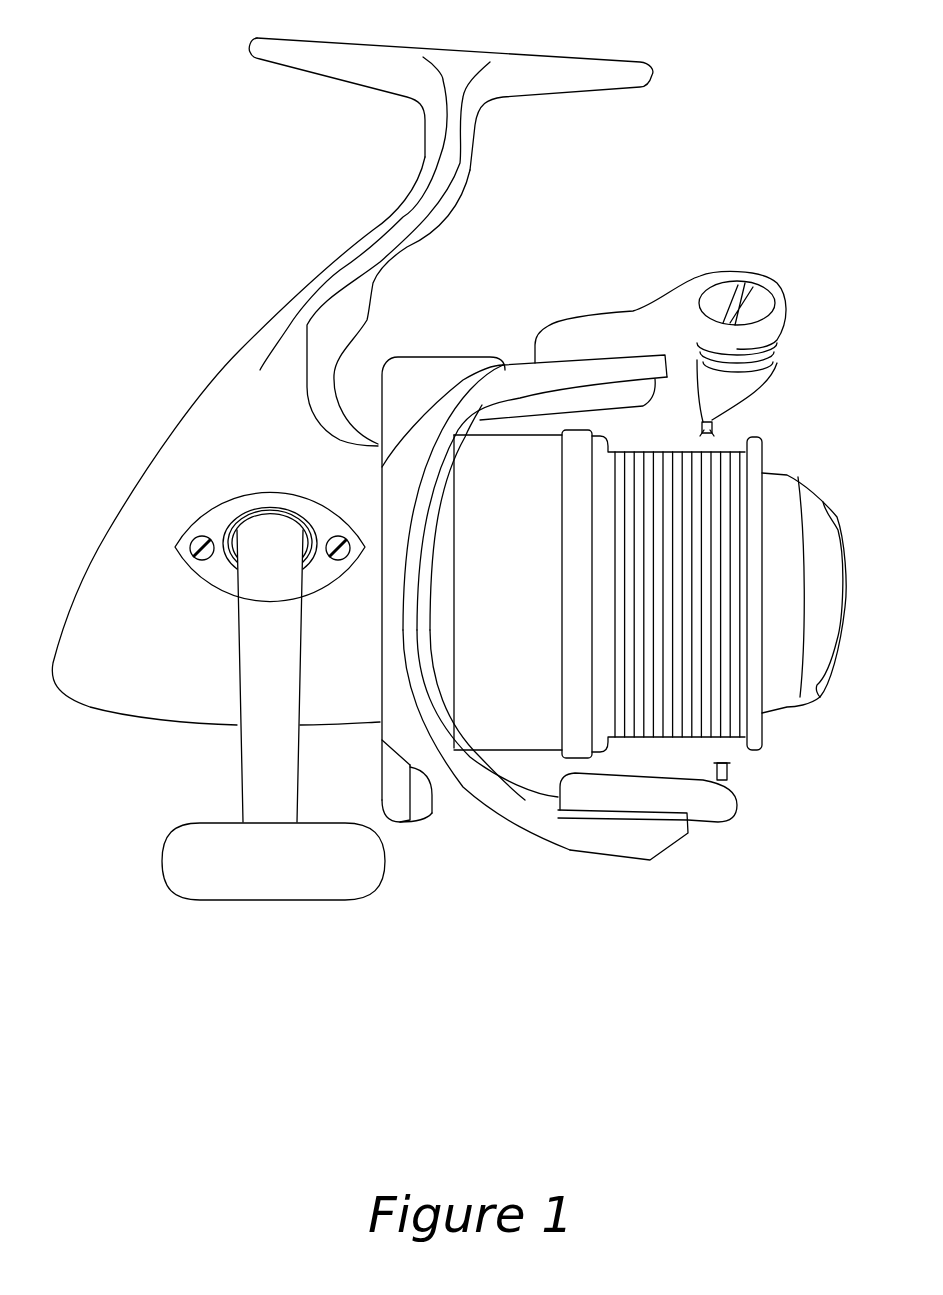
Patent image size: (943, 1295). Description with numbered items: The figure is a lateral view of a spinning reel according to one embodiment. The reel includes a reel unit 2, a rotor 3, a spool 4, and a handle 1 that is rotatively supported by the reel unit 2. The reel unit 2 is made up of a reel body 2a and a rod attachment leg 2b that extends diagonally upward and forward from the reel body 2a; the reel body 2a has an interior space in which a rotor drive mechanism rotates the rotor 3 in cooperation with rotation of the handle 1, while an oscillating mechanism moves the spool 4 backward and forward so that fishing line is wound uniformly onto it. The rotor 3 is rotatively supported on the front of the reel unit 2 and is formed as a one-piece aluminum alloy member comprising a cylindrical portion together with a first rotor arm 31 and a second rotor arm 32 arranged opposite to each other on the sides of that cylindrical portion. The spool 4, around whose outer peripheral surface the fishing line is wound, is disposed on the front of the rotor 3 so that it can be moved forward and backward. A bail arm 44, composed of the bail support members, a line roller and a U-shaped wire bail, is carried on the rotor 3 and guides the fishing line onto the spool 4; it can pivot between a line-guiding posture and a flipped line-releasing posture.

The handle 1 is at (260, 763).
The reel unit 2 is at (352, 381).
The reel body 2a is at (147, 497).
The rod attachment leg 2b is at (258, 327).
The rotor 3 is at (535, 572).
The first rotor arm 31 is at (578, 368).
The second rotor arm 32 is at (590, 835).
The spool 4 is at (718, 465).
The bail arm 44 is at (806, 338).